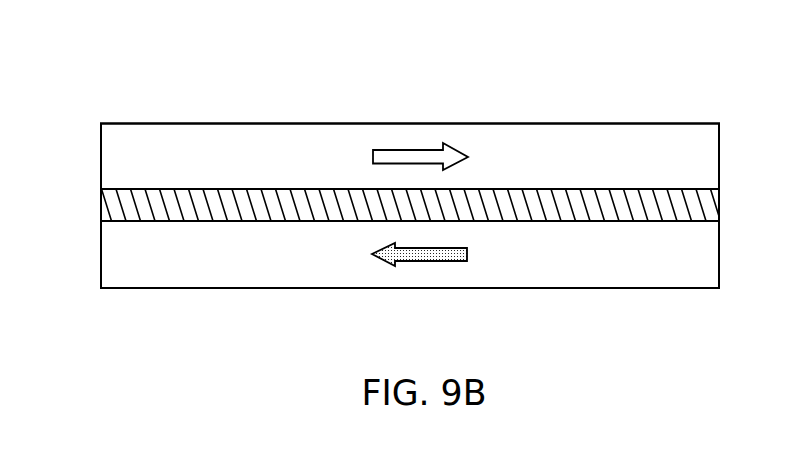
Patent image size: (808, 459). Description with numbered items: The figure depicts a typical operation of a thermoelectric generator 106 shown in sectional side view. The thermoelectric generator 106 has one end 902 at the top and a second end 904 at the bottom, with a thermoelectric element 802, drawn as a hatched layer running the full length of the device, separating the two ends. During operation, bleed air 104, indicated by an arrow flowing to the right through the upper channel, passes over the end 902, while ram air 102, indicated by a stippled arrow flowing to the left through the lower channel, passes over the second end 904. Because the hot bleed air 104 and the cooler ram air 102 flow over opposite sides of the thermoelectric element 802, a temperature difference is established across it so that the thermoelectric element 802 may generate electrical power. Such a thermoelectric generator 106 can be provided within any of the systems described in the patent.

The thermoelectric generator 106 is at (123, 50).
The one end 902 is at (661, 140).
The second end 904 is at (666, 273).
The thermoelectric element 802 is at (719, 206).
The bleed air 104 is at (415, 148).
The ram air 102 is at (426, 264).